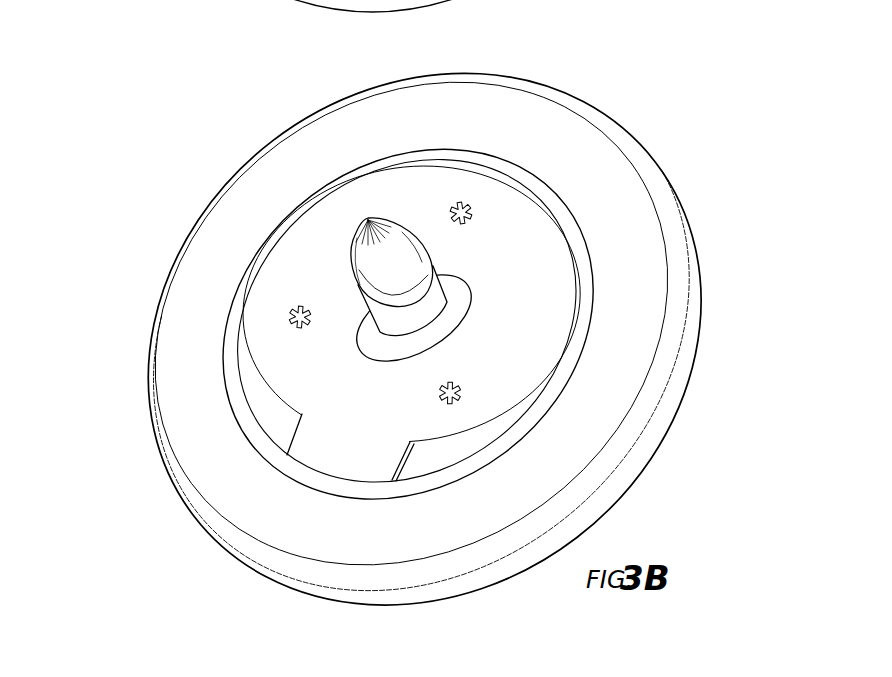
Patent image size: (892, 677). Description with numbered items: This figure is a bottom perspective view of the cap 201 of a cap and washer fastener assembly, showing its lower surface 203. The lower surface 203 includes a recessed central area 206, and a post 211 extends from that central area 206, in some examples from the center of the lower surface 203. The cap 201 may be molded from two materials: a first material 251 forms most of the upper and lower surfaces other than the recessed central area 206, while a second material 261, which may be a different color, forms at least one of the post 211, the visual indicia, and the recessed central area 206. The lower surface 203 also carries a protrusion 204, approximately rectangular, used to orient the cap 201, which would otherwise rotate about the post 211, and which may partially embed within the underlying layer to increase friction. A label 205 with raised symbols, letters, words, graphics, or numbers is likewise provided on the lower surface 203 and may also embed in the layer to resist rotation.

The cap 201 is at (148, 74).
The lower surface 203 is at (590, 138).
The protrusion 204 is at (352, 460).
The label 205 is at (291, 336).
The recessed central area 206 is at (373, 202).
The post 211 is at (373, 258).
The first material 251 is at (640, 290).
The second material 261 is at (532, 367).